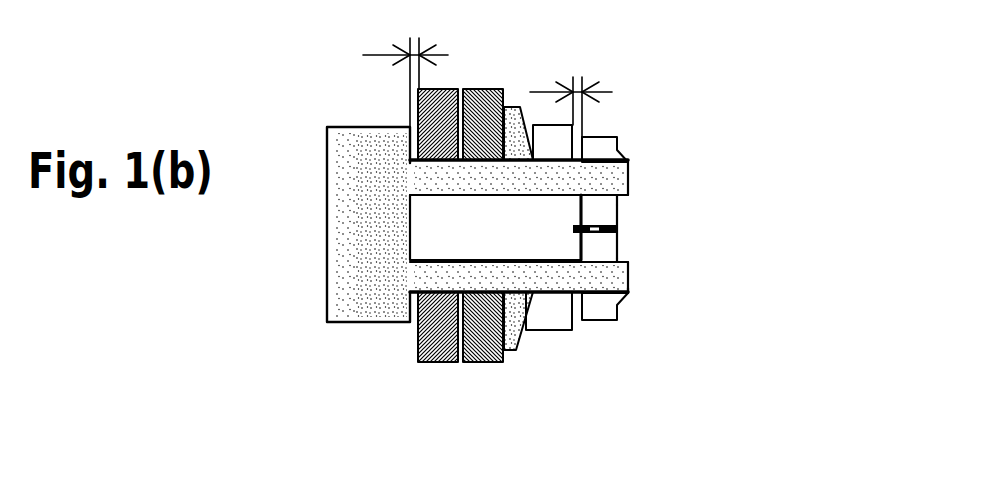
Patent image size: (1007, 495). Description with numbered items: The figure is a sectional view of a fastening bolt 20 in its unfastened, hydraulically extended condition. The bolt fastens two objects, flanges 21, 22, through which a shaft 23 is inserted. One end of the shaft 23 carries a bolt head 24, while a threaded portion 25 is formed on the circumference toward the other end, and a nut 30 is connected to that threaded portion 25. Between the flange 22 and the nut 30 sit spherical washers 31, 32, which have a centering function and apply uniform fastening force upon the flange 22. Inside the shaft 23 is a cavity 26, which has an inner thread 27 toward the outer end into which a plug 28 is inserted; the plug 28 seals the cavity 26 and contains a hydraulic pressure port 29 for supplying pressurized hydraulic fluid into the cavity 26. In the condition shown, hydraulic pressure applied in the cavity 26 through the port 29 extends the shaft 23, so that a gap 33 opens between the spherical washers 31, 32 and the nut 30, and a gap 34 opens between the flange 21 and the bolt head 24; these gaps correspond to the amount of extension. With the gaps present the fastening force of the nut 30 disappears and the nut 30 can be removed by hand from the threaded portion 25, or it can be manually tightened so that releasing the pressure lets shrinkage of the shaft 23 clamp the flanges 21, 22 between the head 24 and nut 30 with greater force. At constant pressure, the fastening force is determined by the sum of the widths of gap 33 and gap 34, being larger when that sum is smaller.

The fastening bolt 20 is at (750, 73).
The flange 21 is at (417, 330).
The flange 22 is at (475, 363).
The shaft 23 is at (547, 282).
The bolt head 24 is at (348, 257).
The threaded portion 25 is at (630, 295).
The cavity 26 is at (624, 229).
The inner thread 27 is at (624, 202).
The plug 28 is at (598, 244).
The hydraulic pressure port 29 is at (626, 231).
The nut 30 is at (598, 308).
The spherical washer 31 is at (507, 352).
The spherical washer 32 is at (557, 320).
The gap 33 is at (588, 85).
The gap 34 is at (421, 63).